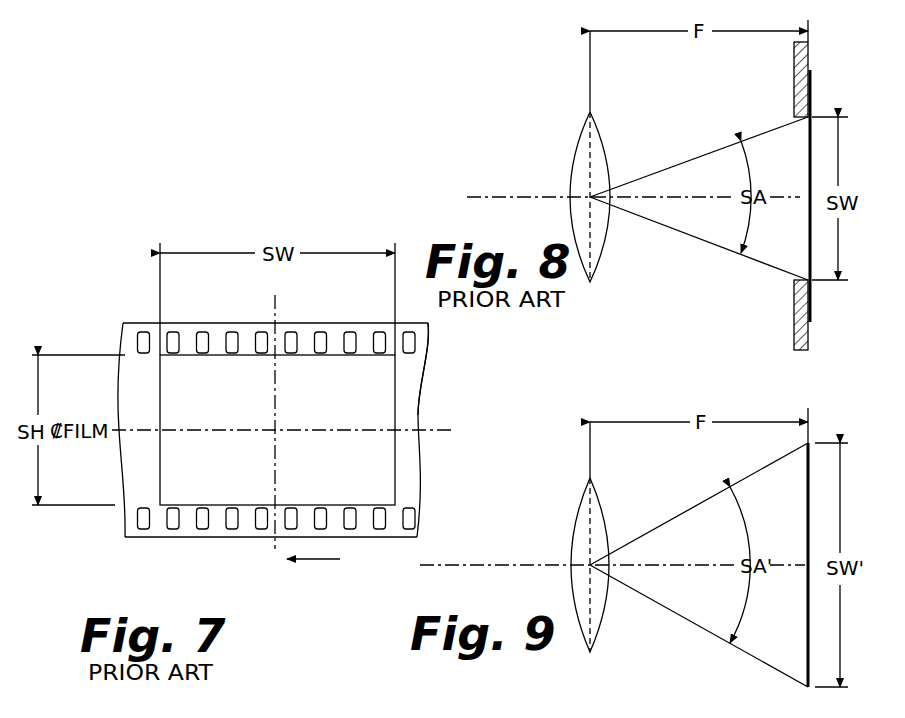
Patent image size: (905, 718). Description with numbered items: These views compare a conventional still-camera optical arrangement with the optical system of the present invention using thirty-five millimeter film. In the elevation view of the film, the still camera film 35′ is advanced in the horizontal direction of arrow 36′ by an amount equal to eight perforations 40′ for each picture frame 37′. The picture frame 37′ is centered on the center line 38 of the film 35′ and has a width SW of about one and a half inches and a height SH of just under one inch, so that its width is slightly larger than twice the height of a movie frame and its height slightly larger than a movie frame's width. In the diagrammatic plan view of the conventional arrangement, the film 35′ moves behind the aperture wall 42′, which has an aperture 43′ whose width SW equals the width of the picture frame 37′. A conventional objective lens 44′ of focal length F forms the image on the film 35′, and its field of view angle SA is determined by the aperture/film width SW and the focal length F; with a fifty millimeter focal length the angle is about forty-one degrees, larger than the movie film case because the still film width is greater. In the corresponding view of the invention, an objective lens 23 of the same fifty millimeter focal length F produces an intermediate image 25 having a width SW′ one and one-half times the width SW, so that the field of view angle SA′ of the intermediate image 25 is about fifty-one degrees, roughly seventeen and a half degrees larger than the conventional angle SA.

In FIG. 7, the 35 mm film 35′ is at (210, 537).
In FIG. 8, the 35 mm film 35′ is at (810, 93).
In FIG. 7, the picture frame 37′ is at (257, 473).
In FIG. 7, the perforations 40′ is at (413, 512).
In FIG. 7, the center line 38 is at (413, 425).
In FIG. 7, the arrow 36′ is at (330, 559).
In FIG. 8, the objective lens 44′ is at (600, 270).
In FIG. 8, the aperture wall 42′ is at (795, 328).
In FIG. 8, the aperture 43′ is at (806, 280).
In FIG. 9, the objective lens 23 is at (598, 637).
In FIG. 9, the intermediate image 25 is at (806, 658).